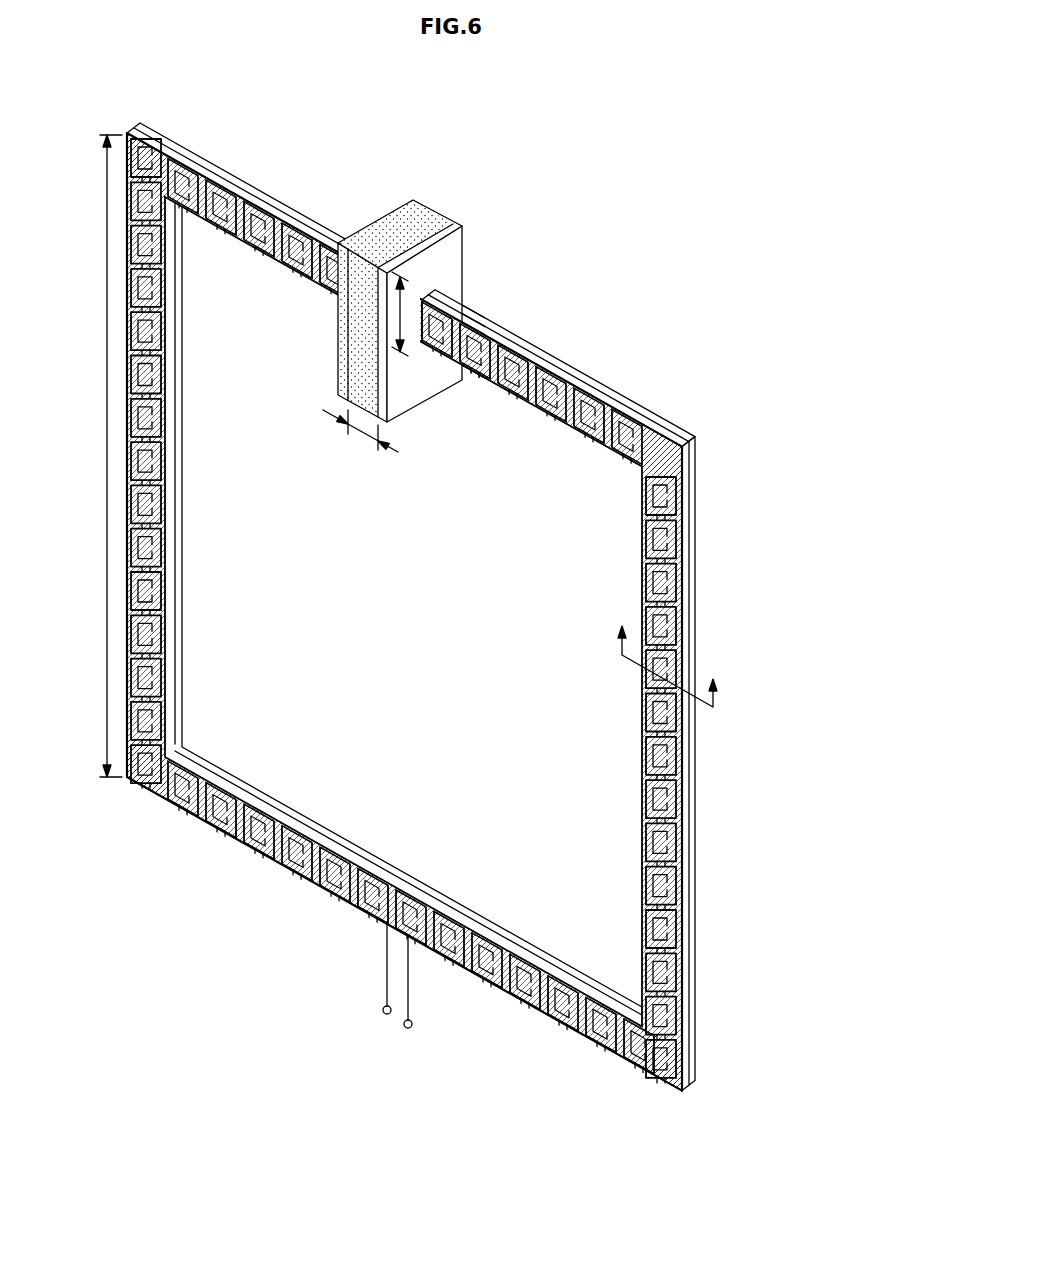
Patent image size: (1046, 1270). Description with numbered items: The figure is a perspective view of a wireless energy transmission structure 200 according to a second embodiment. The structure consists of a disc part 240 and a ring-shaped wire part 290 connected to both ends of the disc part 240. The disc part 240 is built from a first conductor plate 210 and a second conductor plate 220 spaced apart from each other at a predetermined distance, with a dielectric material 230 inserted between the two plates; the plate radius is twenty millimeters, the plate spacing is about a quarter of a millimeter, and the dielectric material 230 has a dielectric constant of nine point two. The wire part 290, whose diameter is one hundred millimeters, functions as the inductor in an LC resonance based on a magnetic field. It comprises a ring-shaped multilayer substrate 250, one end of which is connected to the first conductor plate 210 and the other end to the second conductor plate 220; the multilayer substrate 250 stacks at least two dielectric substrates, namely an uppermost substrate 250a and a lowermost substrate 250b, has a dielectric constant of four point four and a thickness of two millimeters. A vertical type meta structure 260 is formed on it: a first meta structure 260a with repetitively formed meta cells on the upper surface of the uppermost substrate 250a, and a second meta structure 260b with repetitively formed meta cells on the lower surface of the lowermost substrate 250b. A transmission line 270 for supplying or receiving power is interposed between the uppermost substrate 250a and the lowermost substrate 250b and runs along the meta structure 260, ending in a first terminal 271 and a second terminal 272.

The wireless energy transmission structure 200 is at (313, 86).
The first conductor plate 210 is at (416, 200).
The second conductor plate 220 is at (463, 229).
The dielectric material 230 is at (432, 215).
The disc part 240 is at (442, 410).
The multilayer substrate 250 is at (672, 352).
The uppermost substrate 250a is at (566, 382).
The lowermost substrate 250b is at (627, 410).
The meta structure 260 is at (815, 527).
The first meta structure 260a is at (693, 523).
The second meta structure 260b is at (697, 568).
The transmission line 270 is at (385, 977).
The first terminal 271 is at (383, 1011).
The second terminal 272 is at (412, 1027).
The wire part 290 is at (547, 334).